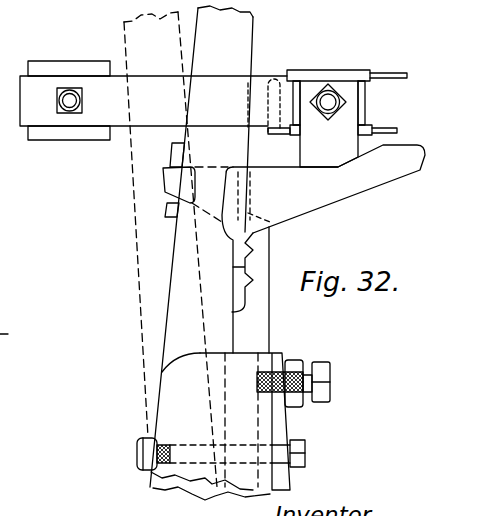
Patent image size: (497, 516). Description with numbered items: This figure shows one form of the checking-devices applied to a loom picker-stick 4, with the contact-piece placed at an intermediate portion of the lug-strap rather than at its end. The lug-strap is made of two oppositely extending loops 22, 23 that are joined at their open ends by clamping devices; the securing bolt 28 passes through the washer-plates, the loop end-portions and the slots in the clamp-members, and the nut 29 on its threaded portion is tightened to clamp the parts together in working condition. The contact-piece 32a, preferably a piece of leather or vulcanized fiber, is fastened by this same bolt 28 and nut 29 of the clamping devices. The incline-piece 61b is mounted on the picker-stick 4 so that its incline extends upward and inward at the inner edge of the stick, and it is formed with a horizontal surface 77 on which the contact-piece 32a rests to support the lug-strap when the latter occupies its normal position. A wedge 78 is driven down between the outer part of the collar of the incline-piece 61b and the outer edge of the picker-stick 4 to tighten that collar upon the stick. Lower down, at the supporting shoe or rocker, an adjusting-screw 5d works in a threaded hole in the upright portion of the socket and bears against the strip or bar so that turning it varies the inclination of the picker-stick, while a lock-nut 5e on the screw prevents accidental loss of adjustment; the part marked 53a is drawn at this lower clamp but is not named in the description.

The picker-stick 4 is at (171, 262).
The loop 23 is at (235, 75).
The loop 22 is at (398, 72).
The contact-piece 32a is at (299, 152).
The securing bolt 28 is at (344, 101).
The nut 29 is at (341, 106).
The wedge 78 is at (171, 152).
The incline-piece 61b is at (308, 209).
The horizontal surface 77 is at (268, 170).
The clamp 53a is at (289, 422).
The lock-nut 5e is at (296, 358).
The adjusting-screw 5d is at (331, 361).